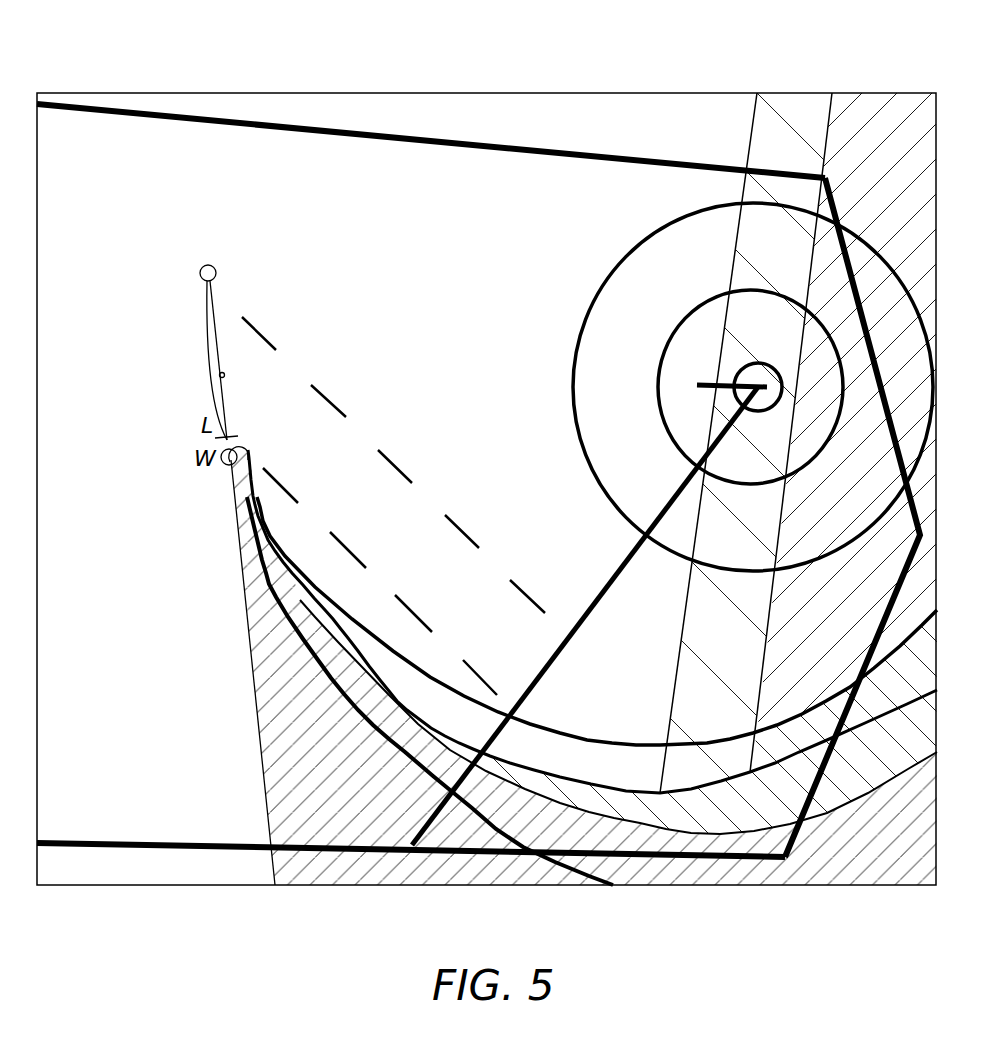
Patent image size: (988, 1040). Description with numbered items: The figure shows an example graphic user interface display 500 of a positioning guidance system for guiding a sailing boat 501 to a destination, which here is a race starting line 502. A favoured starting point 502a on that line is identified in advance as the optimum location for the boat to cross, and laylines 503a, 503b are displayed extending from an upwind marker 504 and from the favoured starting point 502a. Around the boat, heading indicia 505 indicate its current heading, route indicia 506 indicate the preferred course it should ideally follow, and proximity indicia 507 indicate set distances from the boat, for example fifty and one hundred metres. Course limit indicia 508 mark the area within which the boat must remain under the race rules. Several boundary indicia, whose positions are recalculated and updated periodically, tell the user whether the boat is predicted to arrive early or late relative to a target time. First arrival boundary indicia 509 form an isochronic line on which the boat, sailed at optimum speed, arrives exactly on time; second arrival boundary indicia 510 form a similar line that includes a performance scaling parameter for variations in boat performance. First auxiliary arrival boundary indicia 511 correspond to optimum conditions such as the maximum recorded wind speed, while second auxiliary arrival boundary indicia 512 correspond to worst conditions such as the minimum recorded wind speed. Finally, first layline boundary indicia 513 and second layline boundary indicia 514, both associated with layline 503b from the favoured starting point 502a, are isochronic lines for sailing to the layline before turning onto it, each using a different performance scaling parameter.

The graphic user interface display 500 is at (88, 78).
The sailing boat 501 is at (745, 362).
The race starting line 502 is at (206, 352).
The favoured starting point 502a is at (216, 438).
The layline 503a is at (332, 402).
The layline 503b is at (283, 486).
The upwind marker 504 is at (203, 267).
The heading indicia 505 is at (697, 383).
The route indicia 506 is at (607, 567).
The proximity indicia 507 is at (665, 422).
The course limit indicia 508 is at (385, 140).
The first arrival boundary indicia 509 is at (417, 712).
The second arrival boundary indicia 510 is at (627, 793).
The first auxiliary arrival boundary indicia 511 is at (565, 868).
The second auxiliary arrival boundary indicia 512 is at (580, 733).
The first layline boundary indicia 513 is at (682, 630).
The second layline boundary indicia 514 is at (758, 665).